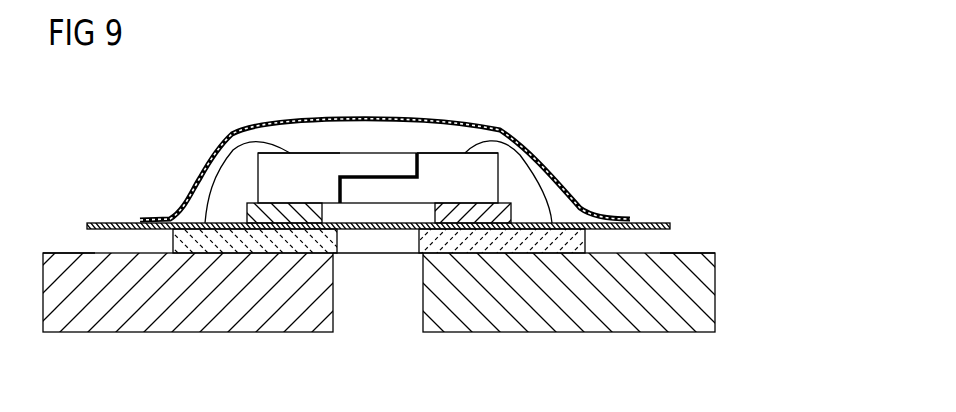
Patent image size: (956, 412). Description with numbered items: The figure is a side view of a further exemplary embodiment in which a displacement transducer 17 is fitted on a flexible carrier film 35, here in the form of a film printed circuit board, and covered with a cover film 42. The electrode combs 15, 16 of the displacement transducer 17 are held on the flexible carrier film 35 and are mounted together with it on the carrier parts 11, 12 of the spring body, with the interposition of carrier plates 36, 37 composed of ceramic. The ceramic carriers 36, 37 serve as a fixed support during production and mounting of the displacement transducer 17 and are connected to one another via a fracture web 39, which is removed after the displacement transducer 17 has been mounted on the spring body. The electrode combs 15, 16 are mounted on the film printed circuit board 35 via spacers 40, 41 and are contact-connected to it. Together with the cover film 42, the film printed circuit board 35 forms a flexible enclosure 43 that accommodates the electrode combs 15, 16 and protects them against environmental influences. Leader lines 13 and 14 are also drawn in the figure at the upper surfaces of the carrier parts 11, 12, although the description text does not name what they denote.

The carrier part 11 is at (98, 325).
The carrier part 12 is at (658, 322).
The surface of first carrier part 13 is at (72, 254).
The surface of second carrier part 14 is at (690, 248).
The electrode comb 15 is at (318, 162).
The electrode comb 16 is at (433, 160).
The displacement transducer 17 is at (381, 138).
The flexible carrier film 35 is at (643, 223).
The carrier plate 36 is at (237, 240).
The carrier plate 37 is at (517, 238).
The fracture web 39 is at (373, 255).
The spacer 40 is at (290, 215).
The spacer 41 is at (465, 210).
The cover film 42 is at (565, 175).
The flexible enclosure 43 is at (385, 143).